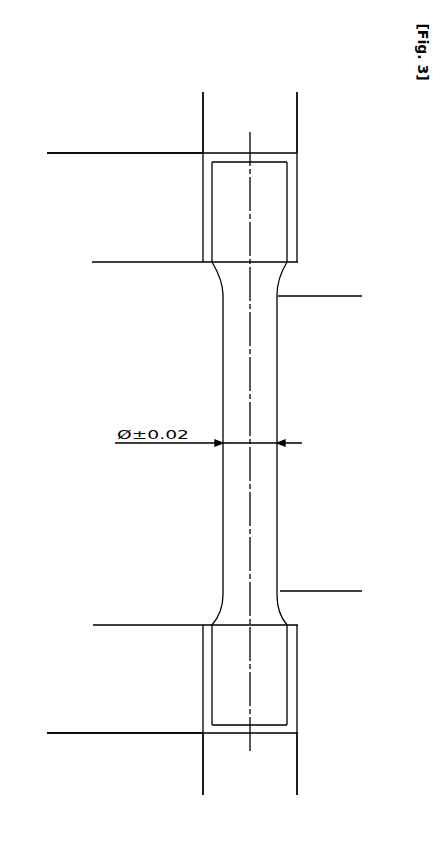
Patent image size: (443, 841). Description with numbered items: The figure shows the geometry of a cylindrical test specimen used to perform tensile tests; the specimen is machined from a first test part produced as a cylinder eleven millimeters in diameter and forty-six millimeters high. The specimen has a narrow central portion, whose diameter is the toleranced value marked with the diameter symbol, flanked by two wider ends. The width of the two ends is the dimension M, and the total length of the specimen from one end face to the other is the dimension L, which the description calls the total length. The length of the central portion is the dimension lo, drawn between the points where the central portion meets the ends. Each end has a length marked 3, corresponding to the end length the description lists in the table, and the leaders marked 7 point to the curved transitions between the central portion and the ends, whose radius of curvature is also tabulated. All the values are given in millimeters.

The length of the two ends 3 is at (98, 733).
The radius of curvature 7 is at (216, 278).
The width of the two ends M is at (297, 795).
The total length of the test specimen L is at (52, 153).
The length of the central portion lo is at (357, 591).